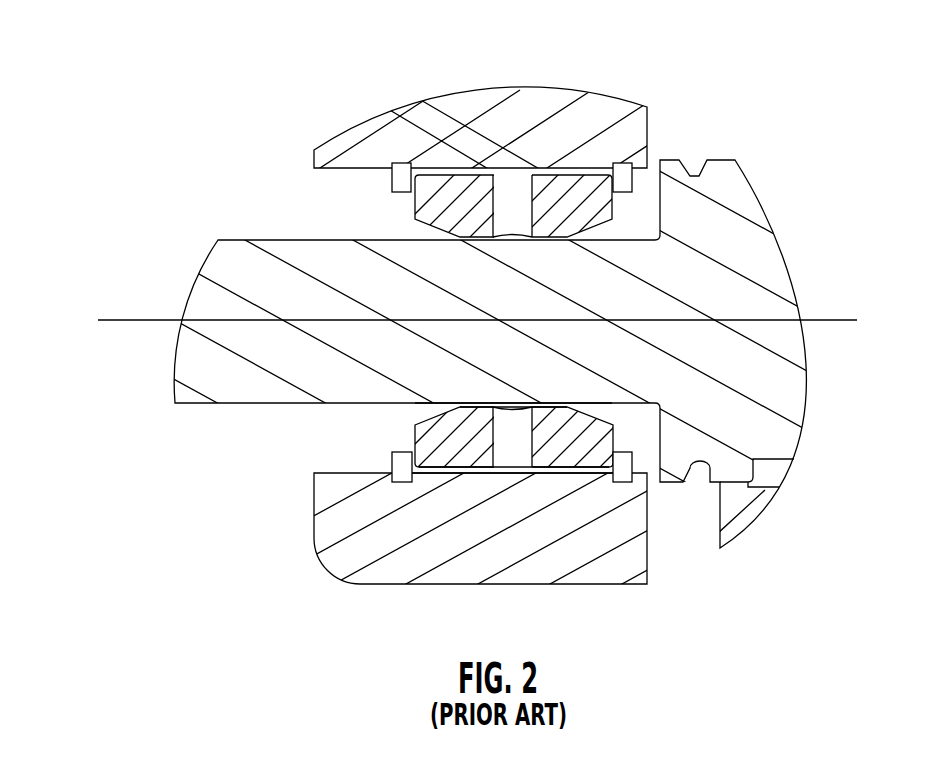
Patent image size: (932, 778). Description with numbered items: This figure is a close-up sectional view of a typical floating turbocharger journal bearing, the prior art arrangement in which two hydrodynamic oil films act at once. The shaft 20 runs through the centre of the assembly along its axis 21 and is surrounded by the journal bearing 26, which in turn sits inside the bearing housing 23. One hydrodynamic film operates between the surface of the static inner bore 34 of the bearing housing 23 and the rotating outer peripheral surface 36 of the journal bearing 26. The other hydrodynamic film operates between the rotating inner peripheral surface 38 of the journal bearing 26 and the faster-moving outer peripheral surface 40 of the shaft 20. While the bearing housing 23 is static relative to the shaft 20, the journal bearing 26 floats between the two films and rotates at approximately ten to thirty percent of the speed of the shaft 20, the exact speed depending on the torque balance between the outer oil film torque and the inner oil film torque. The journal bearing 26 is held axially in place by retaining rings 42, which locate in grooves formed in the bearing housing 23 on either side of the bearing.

The shaft 20 is at (613, 290).
The axis of rotation 21 is at (123, 318).
The bearing housing 23 is at (387, 530).
The journal bearing 26 is at (573, 200).
The inner bore 34 is at (450, 483).
The outer peripheral surface 36 is at (441, 460).
The inner peripheral surface 38 is at (548, 418).
The outer peripheral surface 40 is at (550, 394).
The retaining rings 42 is at (622, 177).